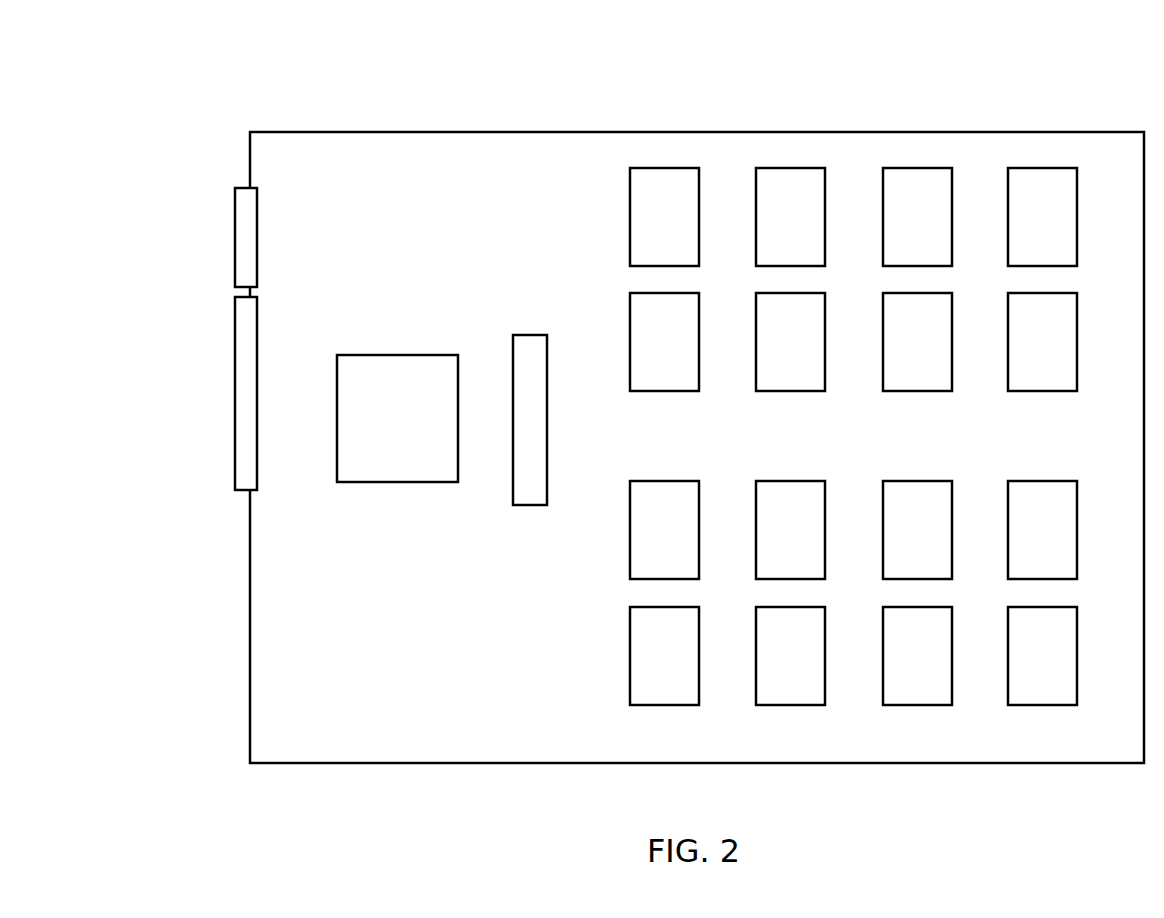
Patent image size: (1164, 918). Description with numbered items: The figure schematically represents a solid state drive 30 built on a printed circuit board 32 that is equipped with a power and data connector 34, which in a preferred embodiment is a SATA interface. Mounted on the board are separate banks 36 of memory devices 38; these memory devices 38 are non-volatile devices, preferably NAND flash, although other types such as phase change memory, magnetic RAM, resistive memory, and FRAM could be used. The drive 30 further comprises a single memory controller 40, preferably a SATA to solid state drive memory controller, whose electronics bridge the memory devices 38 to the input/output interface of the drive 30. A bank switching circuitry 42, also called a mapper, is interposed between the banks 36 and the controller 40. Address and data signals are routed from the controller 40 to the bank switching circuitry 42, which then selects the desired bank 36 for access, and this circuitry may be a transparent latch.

The solid state drive 30 is at (337, 70).
The printed circuit board 32 is at (415, 748).
The power and data connector 34 is at (196, 224).
The banks 36 is at (566, 274).
The memory devices 38 is at (853, 436).
The memory controller 40 is at (397, 418).
The bank switching circuitry 42 is at (547, 410).